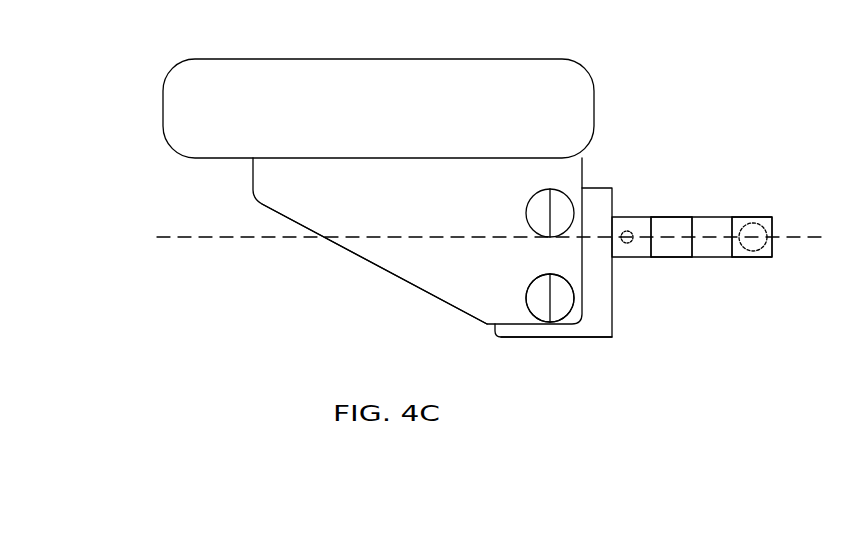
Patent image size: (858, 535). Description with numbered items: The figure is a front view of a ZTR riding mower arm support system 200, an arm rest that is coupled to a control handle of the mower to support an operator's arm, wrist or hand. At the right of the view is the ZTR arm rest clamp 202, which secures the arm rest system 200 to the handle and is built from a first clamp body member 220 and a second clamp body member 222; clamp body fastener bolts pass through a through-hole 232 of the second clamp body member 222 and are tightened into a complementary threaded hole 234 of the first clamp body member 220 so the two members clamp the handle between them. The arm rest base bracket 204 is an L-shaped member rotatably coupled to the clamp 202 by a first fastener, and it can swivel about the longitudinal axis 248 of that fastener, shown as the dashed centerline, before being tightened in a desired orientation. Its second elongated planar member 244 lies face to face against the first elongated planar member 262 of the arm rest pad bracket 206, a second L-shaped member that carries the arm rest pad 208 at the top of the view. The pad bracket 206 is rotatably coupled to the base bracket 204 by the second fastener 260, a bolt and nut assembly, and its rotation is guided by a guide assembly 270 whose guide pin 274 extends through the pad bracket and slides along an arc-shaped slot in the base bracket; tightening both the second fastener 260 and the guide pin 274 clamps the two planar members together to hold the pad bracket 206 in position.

The ZTR riding mower arm support system 200 is at (688, 97).
The ZTR arm rest clamp 202 is at (780, 200).
The arm rest base bracket 204 is at (608, 181).
The arm rest pad bracket 206 is at (364, 266).
The arm rest pad 208 is at (308, 50).
The first clamp body member 220 is at (665, 265).
The second clamp body member 222 is at (758, 265).
The through-hole 232 is at (771, 242).
The threaded hole 234 is at (629, 249).
The second elongated planar member 244 is at (602, 341).
The longitudinal axis 248 is at (179, 232).
The second fastener 260 is at (523, 208).
The first elongated planar member 262 is at (426, 286).
The guide assembly 270 is at (550, 298).
The guide pin 274 is at (528, 317).